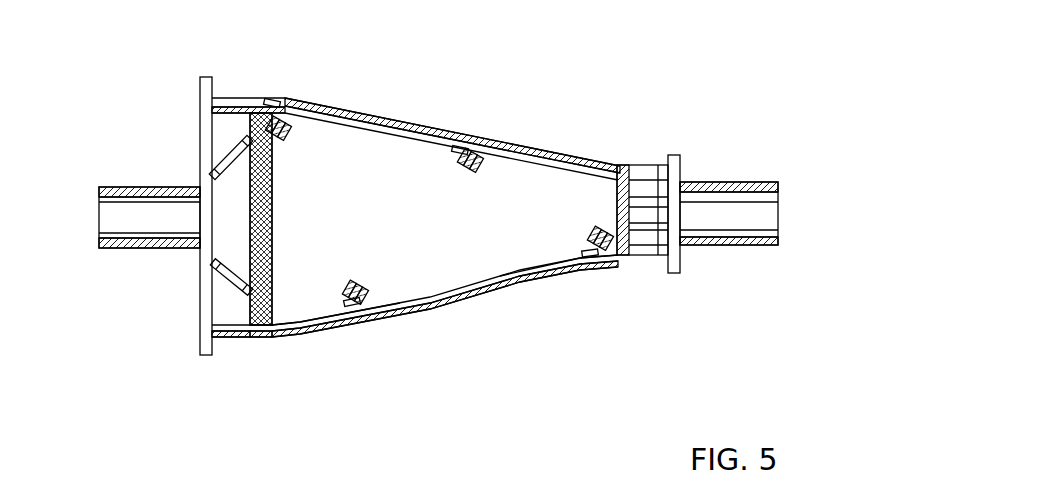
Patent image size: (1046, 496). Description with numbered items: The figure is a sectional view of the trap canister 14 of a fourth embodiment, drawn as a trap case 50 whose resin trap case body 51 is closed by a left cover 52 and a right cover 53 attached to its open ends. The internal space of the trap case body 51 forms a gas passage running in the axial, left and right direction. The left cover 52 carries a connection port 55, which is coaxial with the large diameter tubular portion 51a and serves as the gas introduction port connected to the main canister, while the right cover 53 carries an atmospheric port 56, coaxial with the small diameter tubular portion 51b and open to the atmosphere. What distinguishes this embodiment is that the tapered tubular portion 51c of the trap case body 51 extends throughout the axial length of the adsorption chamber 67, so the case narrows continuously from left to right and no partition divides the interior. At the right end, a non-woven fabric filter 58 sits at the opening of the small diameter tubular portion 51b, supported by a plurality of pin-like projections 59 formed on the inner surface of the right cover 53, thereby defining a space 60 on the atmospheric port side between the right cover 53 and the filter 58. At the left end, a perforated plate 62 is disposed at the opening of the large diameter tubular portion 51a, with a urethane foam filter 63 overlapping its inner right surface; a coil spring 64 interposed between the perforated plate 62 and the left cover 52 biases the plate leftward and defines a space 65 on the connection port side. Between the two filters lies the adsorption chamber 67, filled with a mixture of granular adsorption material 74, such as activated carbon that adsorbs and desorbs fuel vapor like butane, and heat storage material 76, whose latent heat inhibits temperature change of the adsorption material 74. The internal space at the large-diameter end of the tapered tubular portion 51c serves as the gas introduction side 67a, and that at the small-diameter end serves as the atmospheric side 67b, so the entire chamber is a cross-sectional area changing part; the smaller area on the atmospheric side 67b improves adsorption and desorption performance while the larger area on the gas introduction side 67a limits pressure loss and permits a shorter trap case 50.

The trap canister 14 is at (512, 113).
The trap case 50 is at (384, 87).
The trap case body 51 is at (395, 303).
The large diameter tubular portion 51a is at (240, 97).
The small diameter tubular portion 51b is at (641, 165).
The tapered tubular portion 51c is at (447, 127).
The left cover 52 is at (200, 130).
The right cover 53 is at (680, 160).
The connection port 55 is at (125, 249).
The atmospheric port 56 is at (728, 247).
The filter 58 is at (622, 170).
The pin-like projections 59 is at (640, 258).
The space 60 is at (662, 165).
The perforated plate 62 is at (260, 338).
The filter 63 is at (273, 226).
The spring 64 is at (232, 283).
The space 65 is at (235, 330).
The adsorption chamber 67 is at (446, 266).
The gas introduction side 67a is at (303, 318).
The atmospheric side 67b is at (530, 268).
The granular adsorption material 74 is at (276, 106).
The heat storage material 76 is at (285, 136).